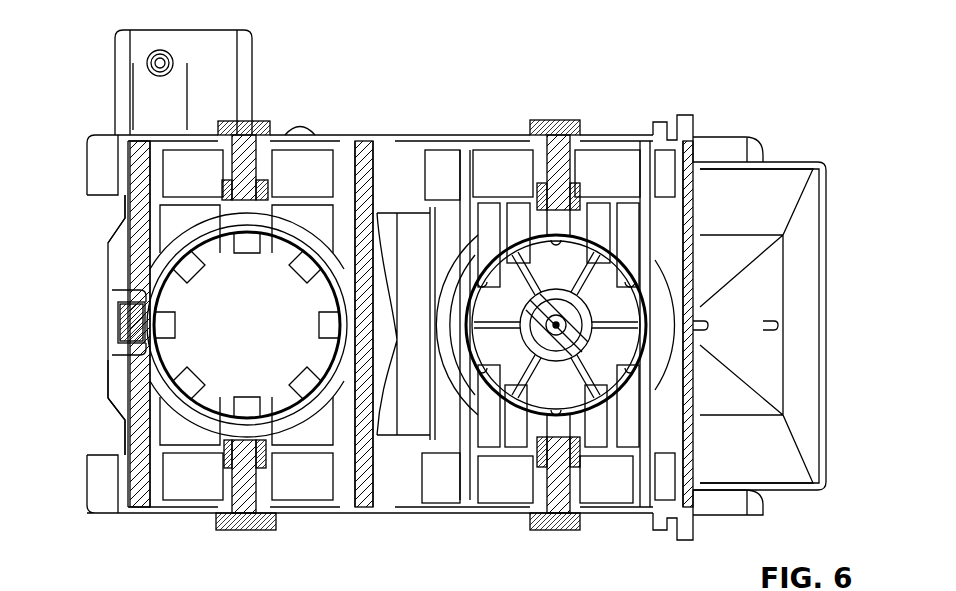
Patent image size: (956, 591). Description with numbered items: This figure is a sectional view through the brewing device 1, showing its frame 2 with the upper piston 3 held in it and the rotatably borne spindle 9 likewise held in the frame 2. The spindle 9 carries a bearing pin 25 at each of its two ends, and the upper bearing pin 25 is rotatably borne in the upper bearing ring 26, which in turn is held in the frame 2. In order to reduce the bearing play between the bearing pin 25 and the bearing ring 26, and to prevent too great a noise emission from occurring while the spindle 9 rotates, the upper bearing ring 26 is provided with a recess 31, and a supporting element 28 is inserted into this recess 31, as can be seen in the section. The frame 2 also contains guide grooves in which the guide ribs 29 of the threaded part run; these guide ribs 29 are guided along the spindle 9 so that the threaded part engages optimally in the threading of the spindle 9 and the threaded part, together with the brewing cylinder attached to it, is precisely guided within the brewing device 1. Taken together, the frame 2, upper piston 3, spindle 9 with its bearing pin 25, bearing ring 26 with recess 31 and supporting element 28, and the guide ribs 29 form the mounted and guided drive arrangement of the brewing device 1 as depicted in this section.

The brewing device 1 is at (733, 80).
The frame 2 is at (405, 160).
The upper piston 3 is at (572, 268).
The spindle 9 is at (297, 226).
The bearing pin 25 is at (160, 398).
The upper bearing ring 26 is at (155, 215).
The supporting element 28 is at (98, 320).
The guide ribs 29 is at (118, 379).
The recess 31 is at (140, 287).